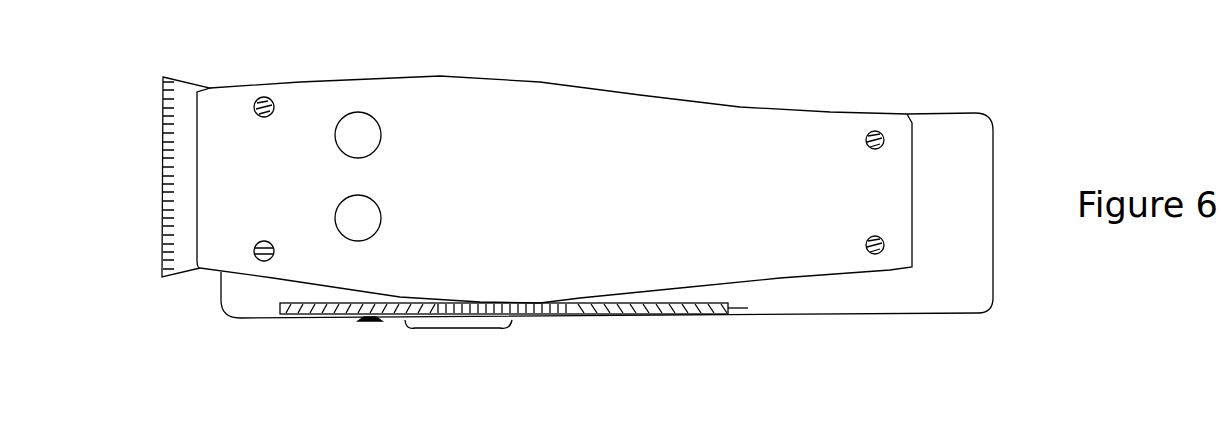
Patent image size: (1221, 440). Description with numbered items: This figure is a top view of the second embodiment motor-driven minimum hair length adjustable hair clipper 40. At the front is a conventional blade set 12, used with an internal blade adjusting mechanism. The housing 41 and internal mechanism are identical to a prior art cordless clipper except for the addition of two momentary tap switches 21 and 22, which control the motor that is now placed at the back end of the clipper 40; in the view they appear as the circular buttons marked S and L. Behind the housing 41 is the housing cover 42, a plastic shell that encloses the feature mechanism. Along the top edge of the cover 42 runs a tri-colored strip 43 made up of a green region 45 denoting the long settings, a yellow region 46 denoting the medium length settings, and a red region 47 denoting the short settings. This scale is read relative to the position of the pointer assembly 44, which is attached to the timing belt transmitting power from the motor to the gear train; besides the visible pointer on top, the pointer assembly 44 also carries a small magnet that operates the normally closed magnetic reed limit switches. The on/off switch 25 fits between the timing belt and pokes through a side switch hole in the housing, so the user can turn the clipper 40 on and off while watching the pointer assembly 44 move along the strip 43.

The blade set 12 is at (185, 92).
The momentary switch 21 is at (365, 207).
The momentary switch 22 is at (375, 123).
The on/off switch 25 is at (512, 322).
The hair clipper 40 is at (755, 43).
The housing 41 is at (627, 107).
The housing cover 42 is at (945, 298).
The tri-colored strip 43 is at (750, 310).
The pointer assembly 44 is at (368, 327).
The green region 45 is at (308, 320).
The yellow region 46 is at (577, 315).
The red region 47 is at (670, 317).